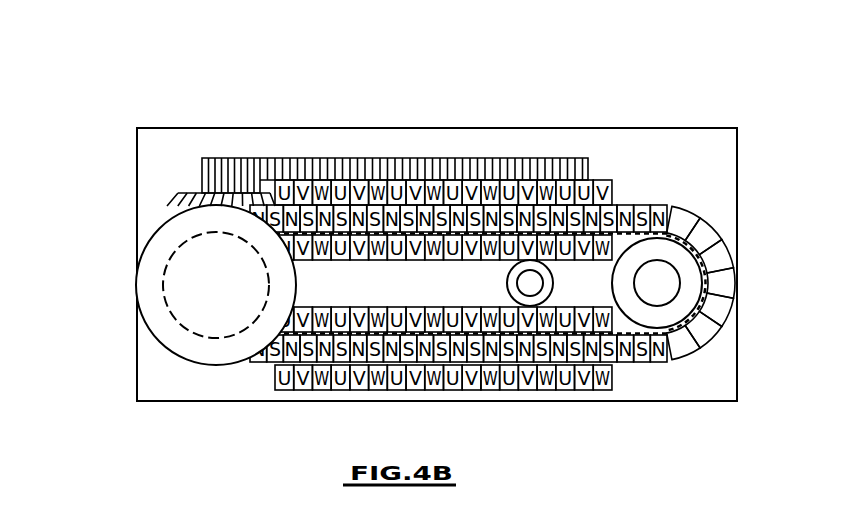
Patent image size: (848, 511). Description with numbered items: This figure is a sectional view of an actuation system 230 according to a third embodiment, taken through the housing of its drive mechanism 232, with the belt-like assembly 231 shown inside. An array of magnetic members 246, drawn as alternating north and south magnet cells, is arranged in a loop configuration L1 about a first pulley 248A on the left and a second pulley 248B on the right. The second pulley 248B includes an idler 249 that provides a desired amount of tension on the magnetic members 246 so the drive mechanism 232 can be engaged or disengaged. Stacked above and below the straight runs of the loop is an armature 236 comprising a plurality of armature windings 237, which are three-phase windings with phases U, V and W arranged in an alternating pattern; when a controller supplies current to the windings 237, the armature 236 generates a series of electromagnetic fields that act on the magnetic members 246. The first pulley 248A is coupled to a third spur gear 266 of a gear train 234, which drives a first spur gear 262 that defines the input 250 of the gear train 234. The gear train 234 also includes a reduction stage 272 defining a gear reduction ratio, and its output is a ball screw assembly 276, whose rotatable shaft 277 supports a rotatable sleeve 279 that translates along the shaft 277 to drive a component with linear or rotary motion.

The actuation system 230 is at (417, 207).
The magnetic belt conveyor 231 is at (435, 222).
The drive mechanism 232 is at (454, 246).
The gear train 234 is at (328, 152).
The armature 236 is at (475, 148).
The armature windings 237 is at (538, 148).
The magnetic members 246 is at (522, 260).
The first pulley 248A is at (176, 285).
The second pulley 248B is at (712, 294).
The idler 249 is at (720, 280).
The input 250 is at (164, 163).
The first spur gear 262 is at (171, 201).
The third spur gear 266 is at (180, 285).
The reduction stage 272 is at (408, 134).
The ball screw assembly 276 is at (527, 329).
The shaft 277 is at (489, 288).
The sleeve 279 is at (463, 283).
The loop configuration L1 is at (728, 275).